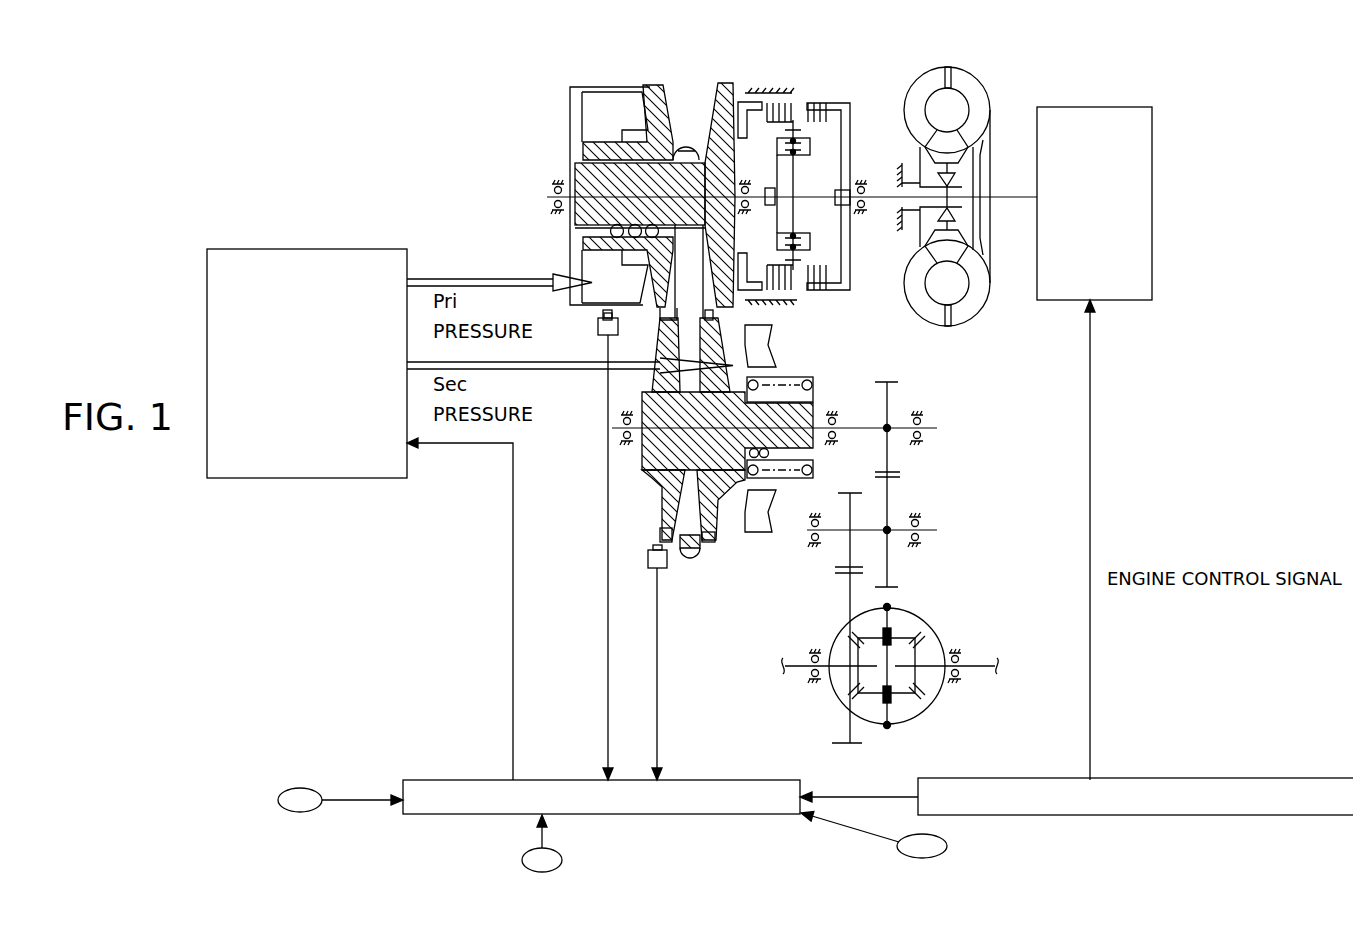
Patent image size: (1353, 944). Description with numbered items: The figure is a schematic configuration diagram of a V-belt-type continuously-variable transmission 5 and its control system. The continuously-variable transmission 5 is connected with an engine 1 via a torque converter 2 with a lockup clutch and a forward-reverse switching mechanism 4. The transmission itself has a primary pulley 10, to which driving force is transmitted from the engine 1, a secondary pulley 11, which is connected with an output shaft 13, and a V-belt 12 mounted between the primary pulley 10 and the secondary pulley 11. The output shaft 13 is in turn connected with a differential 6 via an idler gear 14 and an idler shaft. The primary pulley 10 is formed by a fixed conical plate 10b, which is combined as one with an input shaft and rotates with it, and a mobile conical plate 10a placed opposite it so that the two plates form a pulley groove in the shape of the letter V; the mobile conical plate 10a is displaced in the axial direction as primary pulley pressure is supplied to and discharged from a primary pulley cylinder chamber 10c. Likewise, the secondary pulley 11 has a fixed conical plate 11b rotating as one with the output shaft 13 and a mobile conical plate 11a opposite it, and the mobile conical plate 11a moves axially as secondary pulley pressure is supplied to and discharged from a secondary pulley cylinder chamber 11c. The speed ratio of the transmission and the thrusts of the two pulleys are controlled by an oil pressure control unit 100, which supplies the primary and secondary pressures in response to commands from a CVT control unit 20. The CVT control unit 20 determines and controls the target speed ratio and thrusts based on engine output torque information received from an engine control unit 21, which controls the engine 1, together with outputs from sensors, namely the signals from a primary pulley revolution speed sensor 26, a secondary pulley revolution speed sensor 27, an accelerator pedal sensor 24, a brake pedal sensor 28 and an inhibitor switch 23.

The engine 1 is at (1067, 105).
The torque converter 2 is at (950, 58).
The forward-reverse switching mechanism 4 is at (780, 80).
The continuously-variable transmission 5 is at (645, 76).
The differential 6 is at (932, 610).
The primary pulley 10 is at (720, 76).
The mobile conical plate 10a is at (683, 77).
The fixed conical plate 10b is at (733, 97).
The primary pulley cylinder chamber 10c is at (608, 97).
The secondary pulley 11 is at (786, 346).
The mobile conical plate 11a is at (712, 540).
The fixed conical plate 11b is at (663, 493).
The secondary pulley cylinder chamber 11c is at (737, 524).
The V-belt 12 is at (683, 549).
The output shaft 13 is at (860, 427).
The idler gear 14 is at (849, 506).
The CVT control unit 20 is at (418, 780).
The engine control unit 21 is at (1325, 778).
The inhibitor switch 23 is at (943, 846).
The accelerator pedal sensor 24 is at (292, 795).
The primary pulley revolution speed sensor 26 is at (598, 331).
The secondary pulley revolution speed sensor 27 is at (648, 558).
The brake pedal sensor 28 is at (528, 866).
The oil pressure control unit 100 is at (342, 257).